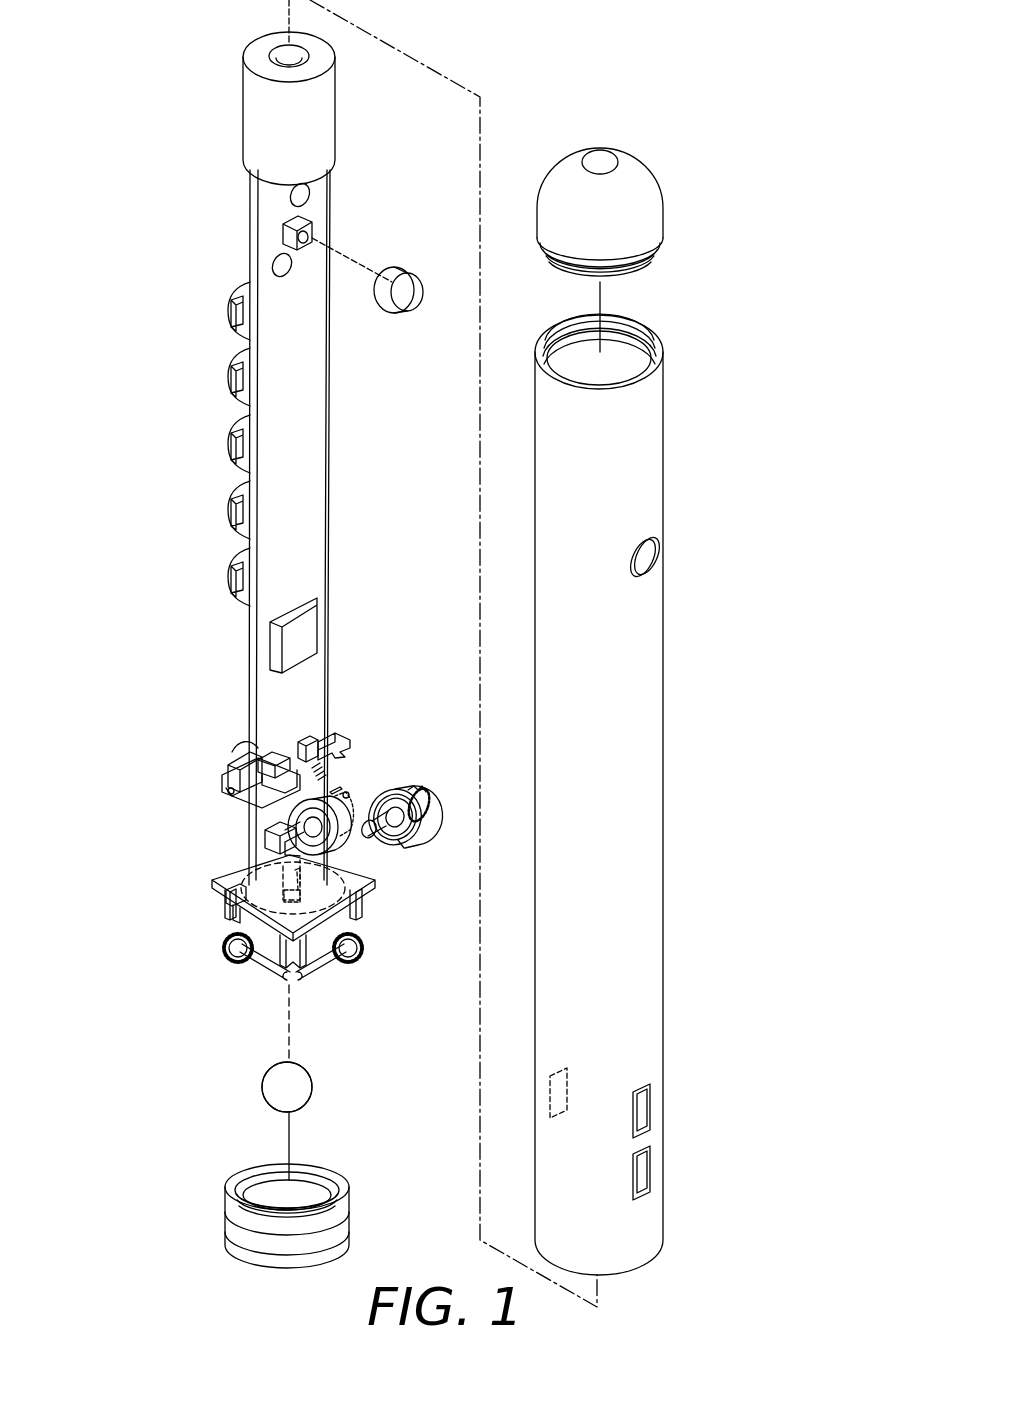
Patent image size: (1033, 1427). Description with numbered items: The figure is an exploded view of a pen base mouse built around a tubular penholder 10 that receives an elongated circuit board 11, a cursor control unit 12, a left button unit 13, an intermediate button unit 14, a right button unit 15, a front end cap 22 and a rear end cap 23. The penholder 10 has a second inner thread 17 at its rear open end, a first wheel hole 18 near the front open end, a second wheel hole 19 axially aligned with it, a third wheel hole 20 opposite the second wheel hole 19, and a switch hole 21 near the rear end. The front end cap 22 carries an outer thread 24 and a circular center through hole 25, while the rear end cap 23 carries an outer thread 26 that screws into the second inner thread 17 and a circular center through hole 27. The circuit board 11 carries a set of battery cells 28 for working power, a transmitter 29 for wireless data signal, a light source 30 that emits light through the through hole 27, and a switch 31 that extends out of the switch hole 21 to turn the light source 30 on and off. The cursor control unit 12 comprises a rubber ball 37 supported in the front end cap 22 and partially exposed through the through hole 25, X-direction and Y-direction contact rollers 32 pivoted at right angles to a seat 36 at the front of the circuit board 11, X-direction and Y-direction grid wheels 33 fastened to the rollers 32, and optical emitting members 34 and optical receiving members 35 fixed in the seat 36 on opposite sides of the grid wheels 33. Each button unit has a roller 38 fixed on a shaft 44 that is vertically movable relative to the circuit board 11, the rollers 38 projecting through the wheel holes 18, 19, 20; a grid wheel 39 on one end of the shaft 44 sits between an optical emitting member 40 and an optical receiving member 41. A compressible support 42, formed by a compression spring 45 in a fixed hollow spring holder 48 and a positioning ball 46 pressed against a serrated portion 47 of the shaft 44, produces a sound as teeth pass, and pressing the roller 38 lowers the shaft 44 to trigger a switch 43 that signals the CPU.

The penholder 10 is at (666, 845).
The circuit board 11 is at (250, 600).
The cursor control unit 12 is at (258, 1092).
The left button unit 13 is at (355, 855).
The intermediate button unit 14 is at (428, 815).
The right button unit 15 is at (215, 770).
The second inner thread 17 is at (650, 340).
The first wheel hole 18 is at (642, 1165).
The second wheel hole 19 is at (640, 1105).
The third wheel hole 20 is at (552, 1085).
The switch hole 21 is at (655, 560).
The front end cap 22 is at (230, 1212).
The rear end cap 23 is at (655, 210).
The outer thread 24 is at (350, 1205).
The circular center through hole 25 is at (318, 1188).
The outer thread 26 is at (563, 275).
The circular center through hole 27 is at (603, 168).
The battery cells 28 is at (243, 360).
The transmitter 29 is at (318, 630).
The light source 30 is at (255, 127).
The switch 31 is at (405, 285).
The X-direction and Y-direction contact rollers 32 is at (258, 965).
The X-direction grid and Y-direction grid wheels 33 is at (235, 948).
The optical emitting members 34 is at (232, 896).
The optical receiving members 35 is at (240, 895).
The seat 36 is at (232, 872).
The rubber ball 37 is at (312, 1085).
The roller 38 is at (393, 795).
The grid wheel 39 is at (413, 790).
The optical emitting member 40 is at (333, 742).
The optical receiving member 41 is at (270, 752).
The compressible support 42 is at (338, 772).
The switch 43 is at (240, 760).
The shaft 44 is at (400, 840).
The compression spring 45 is at (285, 800).
The positioning ball 46 is at (335, 808).
The serrated portion 47 is at (420, 812).
The hollow spring holder 48 is at (305, 748).